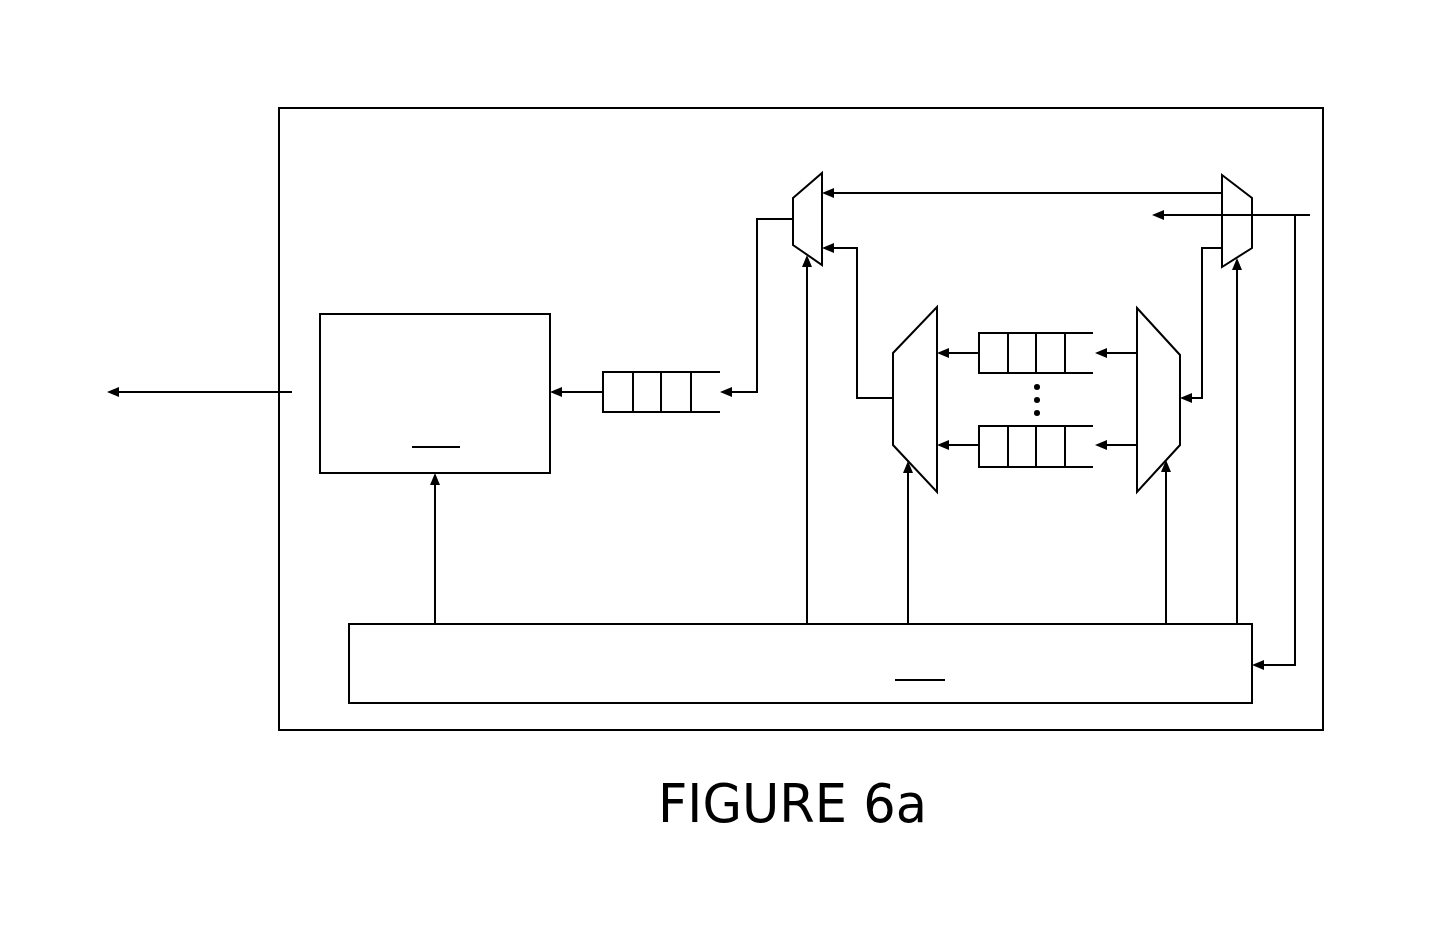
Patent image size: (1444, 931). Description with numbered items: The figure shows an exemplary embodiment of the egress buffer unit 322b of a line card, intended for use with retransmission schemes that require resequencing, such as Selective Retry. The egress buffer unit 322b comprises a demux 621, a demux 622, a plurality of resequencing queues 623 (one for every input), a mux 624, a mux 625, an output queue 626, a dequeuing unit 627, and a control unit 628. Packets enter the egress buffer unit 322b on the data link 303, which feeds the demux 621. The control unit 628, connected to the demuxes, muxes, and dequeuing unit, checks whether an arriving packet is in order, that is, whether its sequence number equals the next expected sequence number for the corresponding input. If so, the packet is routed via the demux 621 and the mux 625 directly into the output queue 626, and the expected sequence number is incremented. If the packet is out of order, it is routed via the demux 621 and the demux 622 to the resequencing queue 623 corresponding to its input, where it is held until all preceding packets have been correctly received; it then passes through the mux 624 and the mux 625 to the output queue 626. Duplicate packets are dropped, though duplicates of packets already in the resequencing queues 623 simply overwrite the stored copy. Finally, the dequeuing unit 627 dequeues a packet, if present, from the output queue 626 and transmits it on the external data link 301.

The egress buffer unit 322b is at (935, 108).
The external data link 301 is at (247, 390).
The data link 303 is at (1352, 215).
The demux 621 is at (1243, 183).
The demux 622 is at (1160, 333).
The resequencing queues 623 is at (1045, 332).
The mux 624 is at (910, 335).
The mux 625 is at (807, 190).
The output queue 626 is at (675, 412).
The dequeuing unit 627 is at (435, 393).
The control unit 628 is at (800, 479).